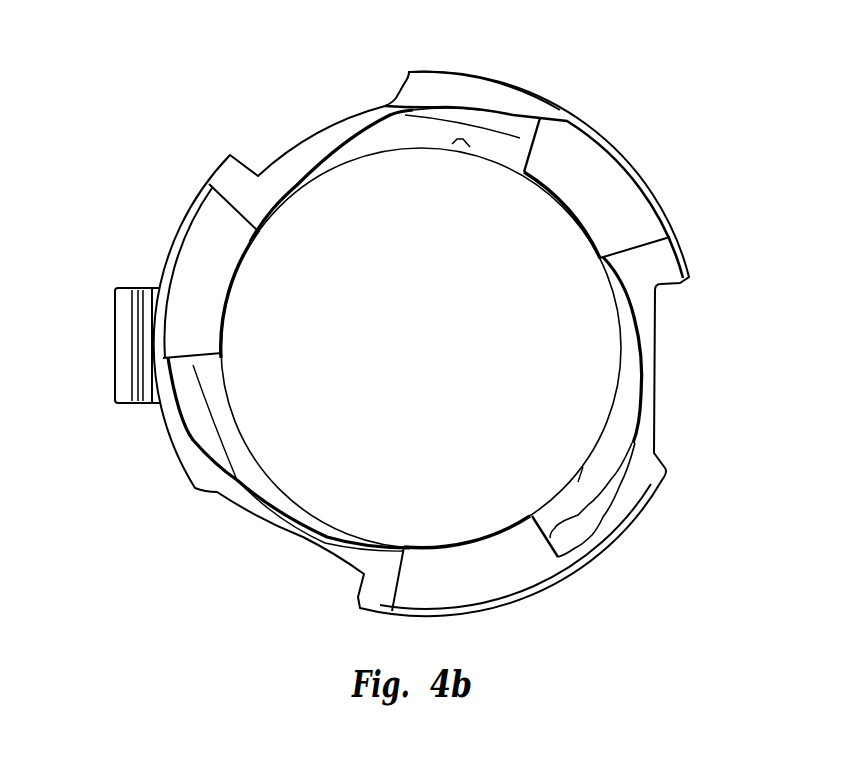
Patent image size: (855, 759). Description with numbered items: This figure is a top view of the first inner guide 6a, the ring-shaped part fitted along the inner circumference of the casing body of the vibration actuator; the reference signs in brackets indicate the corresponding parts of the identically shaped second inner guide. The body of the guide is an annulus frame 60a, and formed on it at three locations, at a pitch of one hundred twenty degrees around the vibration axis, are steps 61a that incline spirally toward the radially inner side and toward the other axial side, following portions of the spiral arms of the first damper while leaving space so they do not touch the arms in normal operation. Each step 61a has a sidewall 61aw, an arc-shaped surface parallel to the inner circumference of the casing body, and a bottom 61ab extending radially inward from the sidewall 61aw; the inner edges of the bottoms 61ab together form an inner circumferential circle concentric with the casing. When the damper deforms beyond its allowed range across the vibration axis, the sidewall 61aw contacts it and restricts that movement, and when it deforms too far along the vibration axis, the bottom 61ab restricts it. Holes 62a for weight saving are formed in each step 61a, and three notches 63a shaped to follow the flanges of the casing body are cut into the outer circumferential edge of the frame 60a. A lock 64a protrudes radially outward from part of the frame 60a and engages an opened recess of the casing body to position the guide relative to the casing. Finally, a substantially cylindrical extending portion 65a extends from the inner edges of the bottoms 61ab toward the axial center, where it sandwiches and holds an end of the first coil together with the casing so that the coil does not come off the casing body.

The first inner guide 6a is at (208, 128).
The annulus frame 60a is at (460, 88).
The step 61a is at (415, 338).
The sidewall 61aw is at (555, 126).
The bottom 61ab is at (587, 163).
The hole 62a is at (452, 114).
The notch 63a is at (346, 120).
The lock 64a is at (113, 357).
The extending portion 65a is at (388, 150).